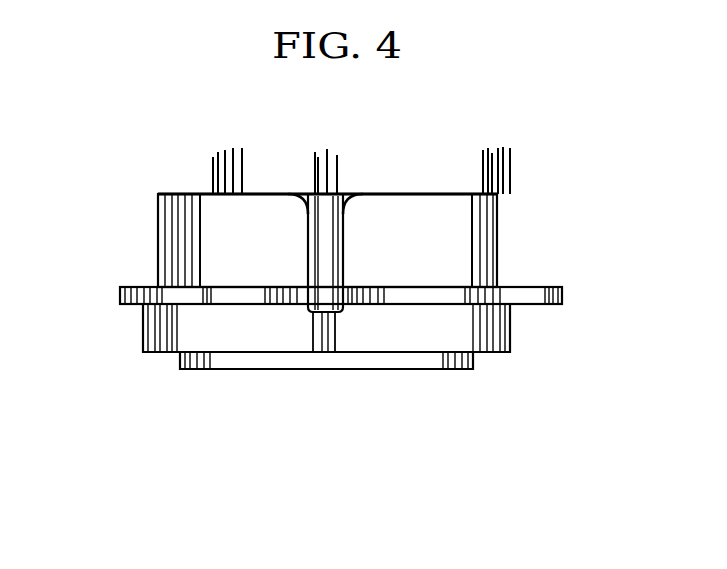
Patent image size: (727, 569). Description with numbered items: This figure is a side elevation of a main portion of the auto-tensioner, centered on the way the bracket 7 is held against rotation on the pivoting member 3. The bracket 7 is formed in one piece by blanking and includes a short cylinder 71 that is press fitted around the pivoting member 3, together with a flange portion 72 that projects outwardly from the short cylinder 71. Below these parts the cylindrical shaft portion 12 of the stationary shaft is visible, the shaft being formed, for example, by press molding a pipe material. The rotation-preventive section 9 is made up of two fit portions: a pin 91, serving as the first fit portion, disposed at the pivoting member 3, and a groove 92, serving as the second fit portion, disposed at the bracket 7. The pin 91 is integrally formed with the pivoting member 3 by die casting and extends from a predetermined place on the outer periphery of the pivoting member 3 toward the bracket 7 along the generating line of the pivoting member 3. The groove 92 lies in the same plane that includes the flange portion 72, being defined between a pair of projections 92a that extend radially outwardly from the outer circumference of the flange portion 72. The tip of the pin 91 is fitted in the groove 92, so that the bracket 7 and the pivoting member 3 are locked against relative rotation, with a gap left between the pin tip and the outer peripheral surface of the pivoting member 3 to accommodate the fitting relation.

The pivoting member 3 is at (497, 235).
The bracket 7 is at (340, 311).
The flange portion 72 is at (130, 306).
The short cylinder 71 is at (160, 352).
The rotation-preventive section 9 is at (335, 361).
The pin 91 is at (313, 352).
The groove 92 is at (335, 332).
The projections 92a is at (293, 287).
The cylindrical shaft portion 12 is at (453, 358).